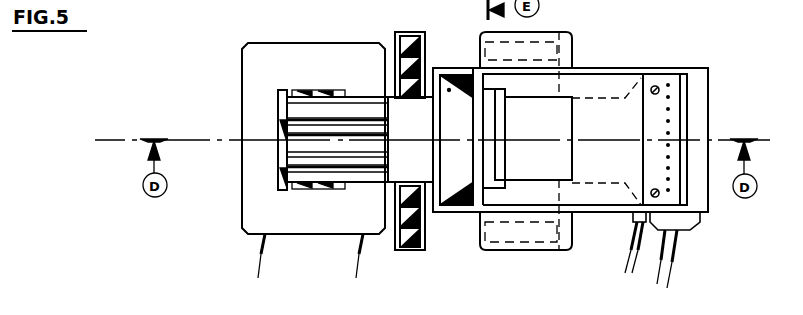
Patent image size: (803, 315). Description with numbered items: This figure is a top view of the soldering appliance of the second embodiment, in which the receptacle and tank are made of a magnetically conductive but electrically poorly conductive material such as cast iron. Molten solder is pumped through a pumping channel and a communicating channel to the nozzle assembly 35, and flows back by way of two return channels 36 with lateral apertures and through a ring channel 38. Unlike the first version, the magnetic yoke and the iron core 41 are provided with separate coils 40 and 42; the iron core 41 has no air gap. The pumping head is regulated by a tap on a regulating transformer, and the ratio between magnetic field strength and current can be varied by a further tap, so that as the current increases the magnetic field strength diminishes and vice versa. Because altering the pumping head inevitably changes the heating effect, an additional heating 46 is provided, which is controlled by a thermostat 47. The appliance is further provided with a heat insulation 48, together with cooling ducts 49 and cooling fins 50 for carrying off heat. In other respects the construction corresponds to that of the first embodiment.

The nozzle assembly 35 is at (675, 103).
The return channels 36 is at (452, 197).
The ring channel 38 is at (552, 233).
The coil 40 is at (307, 219).
The iron core 41 is at (304, 48).
The coil 42 is at (286, 94).
The additional heating 46 is at (688, 233).
The thermostat 47 is at (643, 224).
The heat insulation 48 is at (396, 238).
The cooling ducts 49 is at (283, 140).
The cooling fins 50 is at (302, 110).